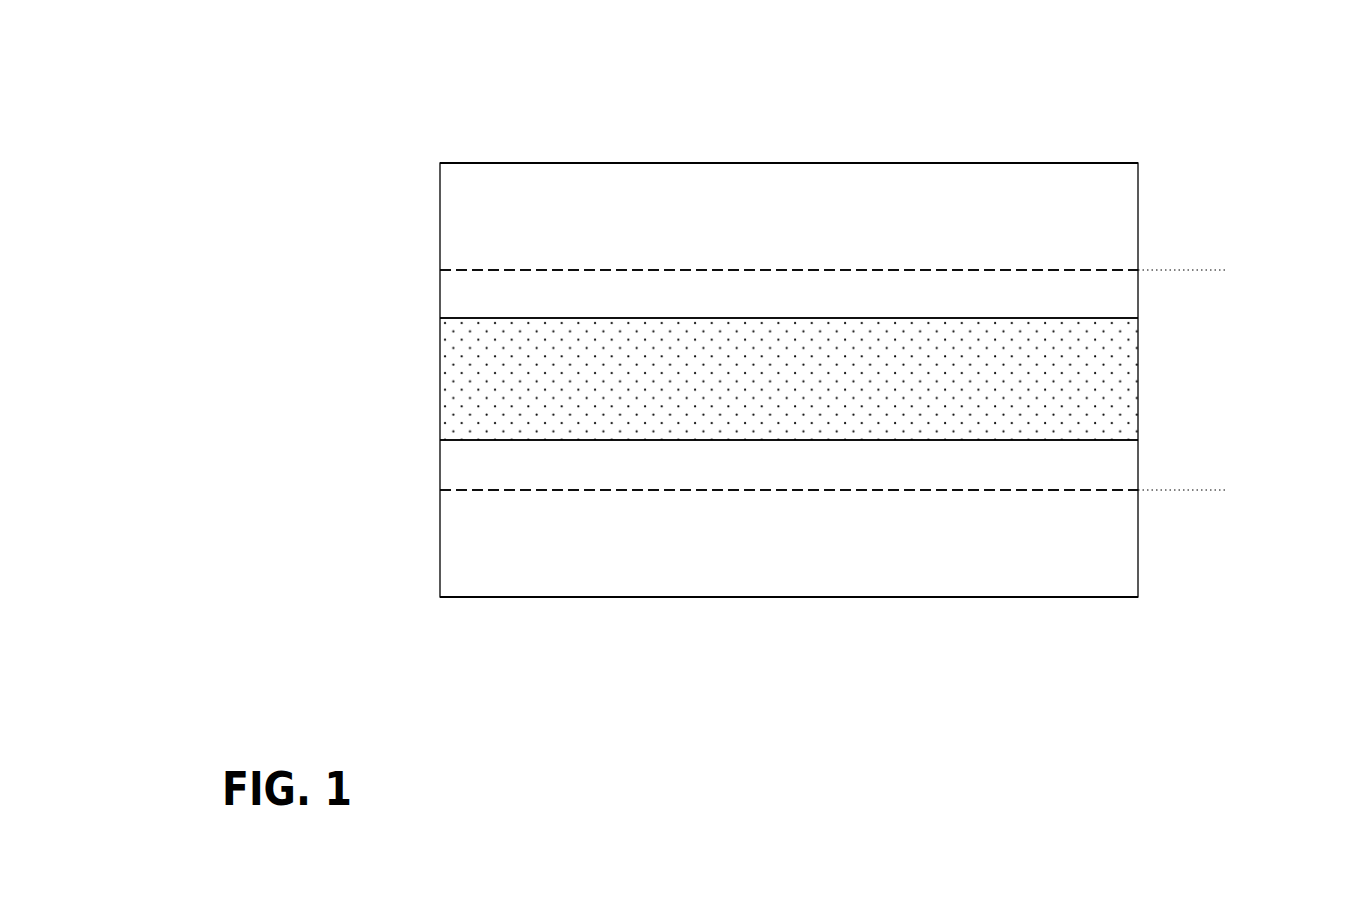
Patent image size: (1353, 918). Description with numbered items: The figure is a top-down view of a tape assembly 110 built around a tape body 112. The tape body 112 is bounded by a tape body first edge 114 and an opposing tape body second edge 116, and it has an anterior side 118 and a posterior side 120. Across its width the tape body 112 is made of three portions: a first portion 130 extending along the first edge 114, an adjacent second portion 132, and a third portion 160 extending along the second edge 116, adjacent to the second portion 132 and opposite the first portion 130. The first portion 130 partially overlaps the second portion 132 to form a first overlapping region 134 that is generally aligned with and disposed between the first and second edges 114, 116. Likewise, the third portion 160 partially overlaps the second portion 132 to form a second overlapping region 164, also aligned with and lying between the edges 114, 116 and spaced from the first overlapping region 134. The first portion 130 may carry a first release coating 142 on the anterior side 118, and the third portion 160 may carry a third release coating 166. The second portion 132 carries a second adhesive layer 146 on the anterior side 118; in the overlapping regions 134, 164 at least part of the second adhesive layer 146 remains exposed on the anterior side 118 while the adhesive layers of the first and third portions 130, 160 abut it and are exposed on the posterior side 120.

The tape assembly 110 is at (428, 100).
The tape body 112 is at (600, 152).
The tape body first edge 114 is at (798, 163).
The tape body second edge 116 is at (893, 597).
The anterior side 118 is at (533, 248).
The posterior side 120 is at (499, 607).
The first portion 130 is at (1162, 163).
The second portion 132 is at (1228, 270).
The first overlapping region 134 is at (419, 268).
The first release coating 142 is at (968, 203).
The second adhesive layer 146 is at (507, 373).
The third portion 160 is at (1162, 440).
The second overlapping region 164 is at (419, 440).
The third release coating 166 is at (980, 548).